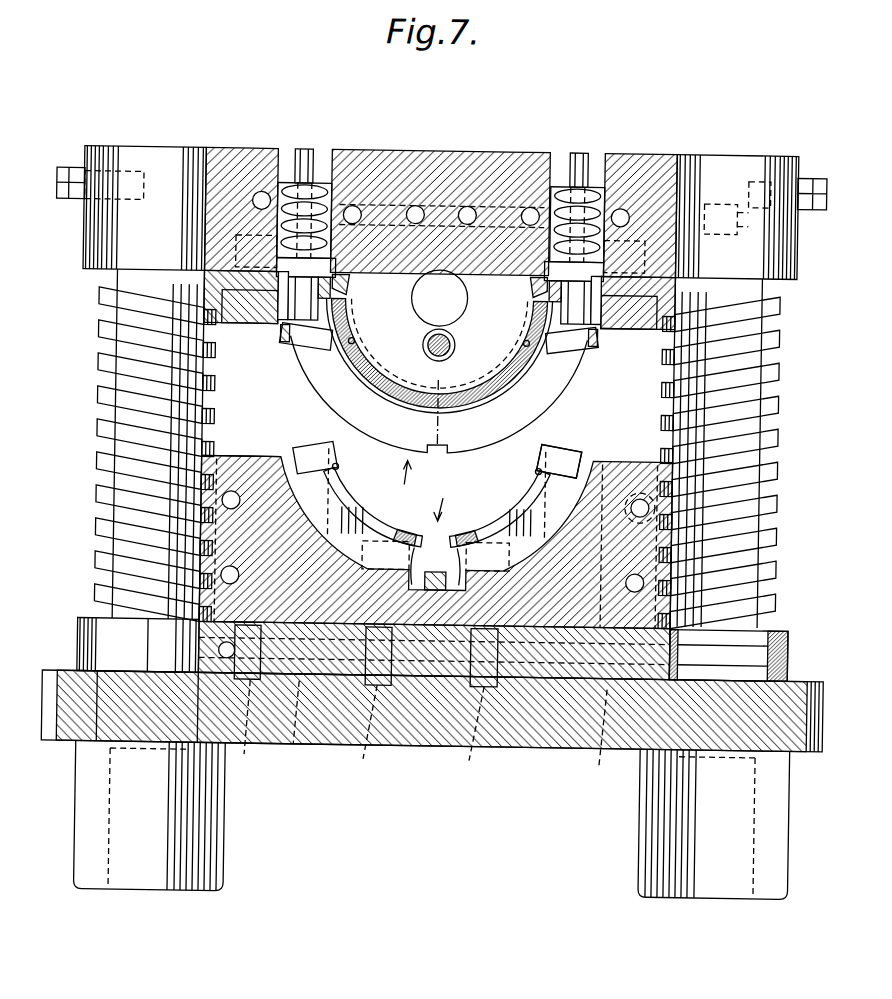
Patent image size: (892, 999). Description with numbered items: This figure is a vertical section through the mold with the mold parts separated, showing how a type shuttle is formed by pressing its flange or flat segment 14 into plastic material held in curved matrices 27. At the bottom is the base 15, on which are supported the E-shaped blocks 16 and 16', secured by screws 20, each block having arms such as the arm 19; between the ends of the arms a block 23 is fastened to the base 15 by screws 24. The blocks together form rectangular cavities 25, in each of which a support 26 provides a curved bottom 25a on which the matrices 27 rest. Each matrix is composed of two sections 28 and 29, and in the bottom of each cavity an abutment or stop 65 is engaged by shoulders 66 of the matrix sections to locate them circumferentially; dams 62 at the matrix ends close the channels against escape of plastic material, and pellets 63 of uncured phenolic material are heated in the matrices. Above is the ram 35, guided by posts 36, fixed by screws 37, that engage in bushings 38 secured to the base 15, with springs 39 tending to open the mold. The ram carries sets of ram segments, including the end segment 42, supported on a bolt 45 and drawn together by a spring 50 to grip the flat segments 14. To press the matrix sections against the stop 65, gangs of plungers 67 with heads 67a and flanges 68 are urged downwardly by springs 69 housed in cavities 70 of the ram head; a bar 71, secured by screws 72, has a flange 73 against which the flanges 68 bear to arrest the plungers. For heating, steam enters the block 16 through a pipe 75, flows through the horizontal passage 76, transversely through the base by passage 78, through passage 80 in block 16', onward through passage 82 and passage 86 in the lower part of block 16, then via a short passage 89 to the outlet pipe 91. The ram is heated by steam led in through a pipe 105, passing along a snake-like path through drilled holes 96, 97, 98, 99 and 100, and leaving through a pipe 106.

The flange or flat segment 14 is at (392, 384).
The base 15 is at (540, 746).
The E-shaped block 16 is at (435, 548).
The E-shaped block 16' is at (240, 508).
The arm 19 is at (318, 452).
The screw 20 is at (418, 734).
The block 23 is at (326, 462).
The screw 24 is at (372, 762).
The rectangular cavity 25 is at (300, 456).
The curved bottom 25a is at (578, 468).
The support 26 is at (508, 580).
The matrix 27 is at (423, 490).
The matrix section 28 is at (320, 408).
The matrix section 29 is at (548, 408).
The ram 35 is at (467, 122).
The post 36 is at (135, 342).
The screw 37 is at (66, 173).
The bushing 38 is at (90, 782).
The spring 39 is at (110, 396).
The end ram segment 42 is at (420, 392).
The bolt 45 is at (453, 346).
The spring 50 is at (347, 345).
The dam 62 is at (338, 466).
The pellet 63 is at (400, 528).
The abutment or stop 65 is at (440, 572).
The shoulder 66 is at (417, 550).
The plunger 67 is at (315, 300).
The head 67a is at (292, 346).
The flange 68 is at (347, 281).
The spring 69 is at (311, 183).
The cavity 70 is at (322, 190).
The bar 71 is at (245, 326).
The screw 72 is at (232, 262).
The flange 73 is at (328, 290).
The pipe 75 is at (674, 522).
The horizontal passage 76 is at (641, 496).
The passage 78 is at (297, 746).
The passage 80 is at (231, 494).
The horizontal passage 82 is at (222, 576).
The passage 86 is at (646, 582).
The short passage 89 is at (221, 653).
The outlet pipe 91 is at (760, 645).
The hole 96 is at (352, 207).
The hole 97 is at (411, 206).
The hole 98 is at (466, 206).
The hole 99 is at (524, 206).
The hole 100 is at (616, 206).
The pipe 105 is at (256, 194).
The pipe 106 is at (716, 232).